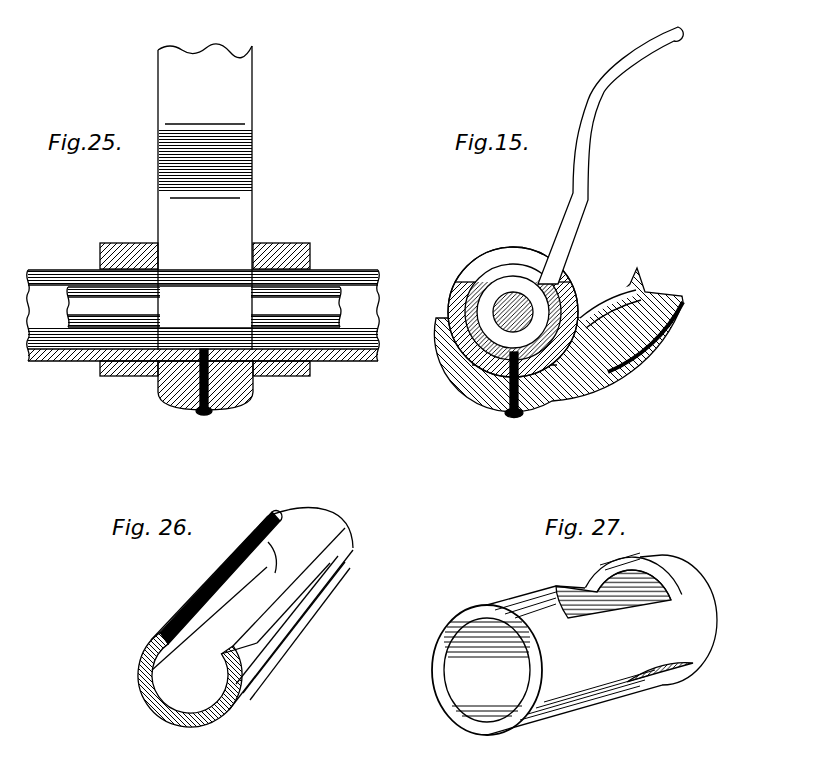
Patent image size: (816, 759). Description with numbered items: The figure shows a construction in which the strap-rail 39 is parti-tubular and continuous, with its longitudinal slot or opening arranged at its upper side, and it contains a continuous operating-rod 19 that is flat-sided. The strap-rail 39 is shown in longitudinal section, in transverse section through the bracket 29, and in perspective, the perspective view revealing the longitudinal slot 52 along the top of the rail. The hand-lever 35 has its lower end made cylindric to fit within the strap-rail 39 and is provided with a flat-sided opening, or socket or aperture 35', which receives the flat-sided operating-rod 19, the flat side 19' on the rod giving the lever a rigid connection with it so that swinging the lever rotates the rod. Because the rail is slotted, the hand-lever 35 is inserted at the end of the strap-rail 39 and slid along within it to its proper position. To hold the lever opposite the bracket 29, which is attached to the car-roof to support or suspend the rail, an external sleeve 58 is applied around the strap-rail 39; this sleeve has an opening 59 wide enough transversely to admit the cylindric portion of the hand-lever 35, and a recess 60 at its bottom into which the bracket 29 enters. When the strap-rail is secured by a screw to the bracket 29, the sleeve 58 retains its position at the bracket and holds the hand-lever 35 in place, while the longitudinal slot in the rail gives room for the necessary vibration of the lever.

In FIG. 25, the operating-rod 19 is at (208, 347).
In FIG. 15, the operating-rod 19 is at (559, 296).
In FIG. 15, the flat side 19' is at (467, 375).
In FIG. 25, the bracket 29 is at (255, 163).
In FIG. 15, the bracket 29 is at (643, 292).
In FIG. 25, the hand-lever 35 is at (205, 197).
In FIG. 15, the hand-lever 35 is at (610, 155).
In FIG. 15, the socket or aperture 35' is at (505, 393).
In FIG. 25, the strap-rail 39 is at (336, 272).
In FIG. 15, the strap-rail 39 is at (452, 307).
In FIG. 26, the strap-rail 39 is at (330, 535).
In FIG. 26, the slot in tube 52 is at (277, 538).
In FIG. 25, the external sleeve 58 is at (290, 246).
In FIG. 15, the external sleeve 58 is at (453, 292).
In FIG. 27, the external sleeve 58 is at (574, 644).
In FIG. 15, the opening 59 is at (488, 258).
In FIG. 27, the opening 59 is at (595, 590).
In FIG. 27, the recess 60 is at (628, 688).